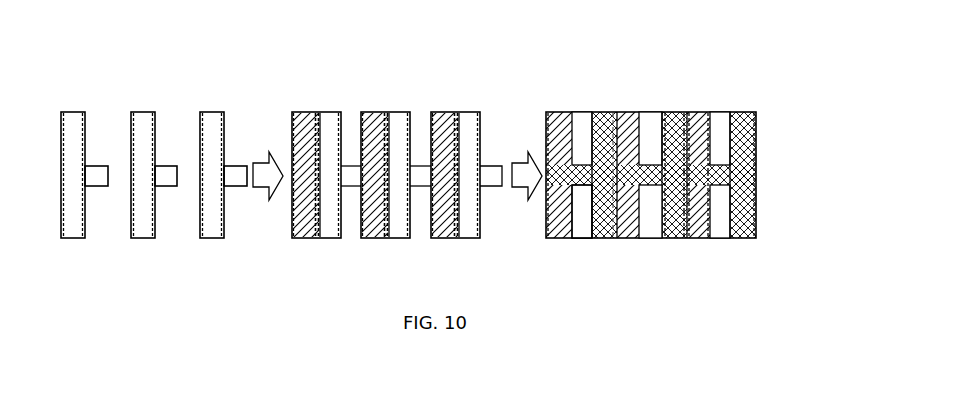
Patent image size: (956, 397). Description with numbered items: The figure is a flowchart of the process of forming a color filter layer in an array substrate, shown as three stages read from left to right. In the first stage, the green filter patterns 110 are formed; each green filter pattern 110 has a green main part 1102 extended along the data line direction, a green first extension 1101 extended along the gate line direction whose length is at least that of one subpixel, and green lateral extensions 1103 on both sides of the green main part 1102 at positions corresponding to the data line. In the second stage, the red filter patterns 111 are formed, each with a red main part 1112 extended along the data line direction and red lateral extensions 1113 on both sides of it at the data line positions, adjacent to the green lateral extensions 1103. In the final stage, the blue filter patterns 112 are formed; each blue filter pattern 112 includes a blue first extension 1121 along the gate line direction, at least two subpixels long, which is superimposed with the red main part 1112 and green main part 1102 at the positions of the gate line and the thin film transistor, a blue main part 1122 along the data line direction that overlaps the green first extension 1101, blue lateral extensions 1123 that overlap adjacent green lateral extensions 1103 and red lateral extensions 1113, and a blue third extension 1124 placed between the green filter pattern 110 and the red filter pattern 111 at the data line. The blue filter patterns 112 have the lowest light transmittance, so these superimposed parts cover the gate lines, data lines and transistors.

The green filter pattern 110 is at (73, 112).
The green first extension 1101 is at (95, 178).
The green main part 1102 is at (140, 125).
The green lateral extension 1103 is at (133, 210).
The red filter pattern 111 is at (310, 112).
The red main part 1112 is at (370, 123).
The red lateral extension 1113 is at (370, 225).
The blue filter pattern 112 is at (612, 112).
The blue first extension 1121 is at (627, 238).
The blue main part 1122 is at (680, 112).
The blue lateral extension 1123 is at (673, 238).
The blue third extension 1124 is at (572, 238).